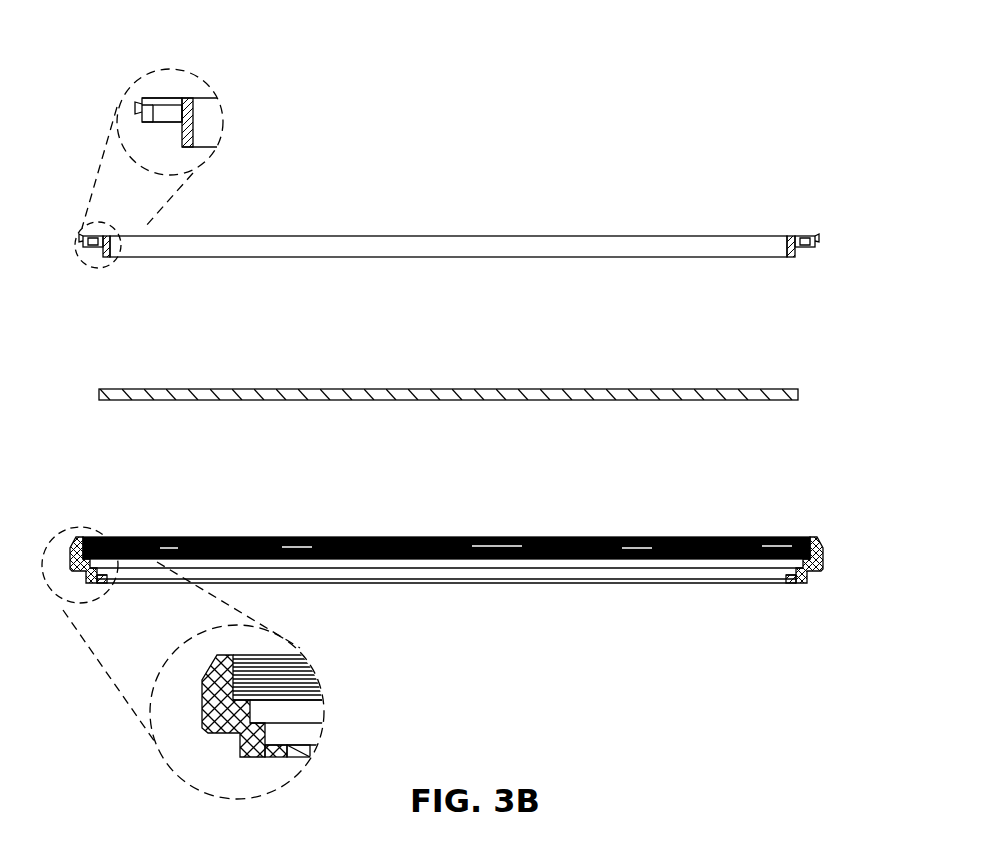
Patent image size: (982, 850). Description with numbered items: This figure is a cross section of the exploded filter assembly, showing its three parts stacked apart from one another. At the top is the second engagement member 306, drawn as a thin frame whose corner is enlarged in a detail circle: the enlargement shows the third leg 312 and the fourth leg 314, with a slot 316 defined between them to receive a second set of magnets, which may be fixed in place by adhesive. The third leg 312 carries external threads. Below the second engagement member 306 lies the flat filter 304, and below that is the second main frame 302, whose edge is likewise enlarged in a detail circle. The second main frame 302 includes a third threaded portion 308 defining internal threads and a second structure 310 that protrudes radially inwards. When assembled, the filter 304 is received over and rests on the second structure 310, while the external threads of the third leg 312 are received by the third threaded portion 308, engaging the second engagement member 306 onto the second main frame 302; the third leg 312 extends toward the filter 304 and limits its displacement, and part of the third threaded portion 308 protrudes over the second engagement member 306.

The second main frame 302 is at (432, 622).
The filter 304 is at (483, 428).
The second engagement member 306 is at (447, 168).
The third threaded portion 308 is at (311, 658).
The second structure 310 is at (316, 783).
The third leg 312 is at (85, 147).
The fourth leg 314 is at (205, 156).
The slot 316 is at (195, 72).